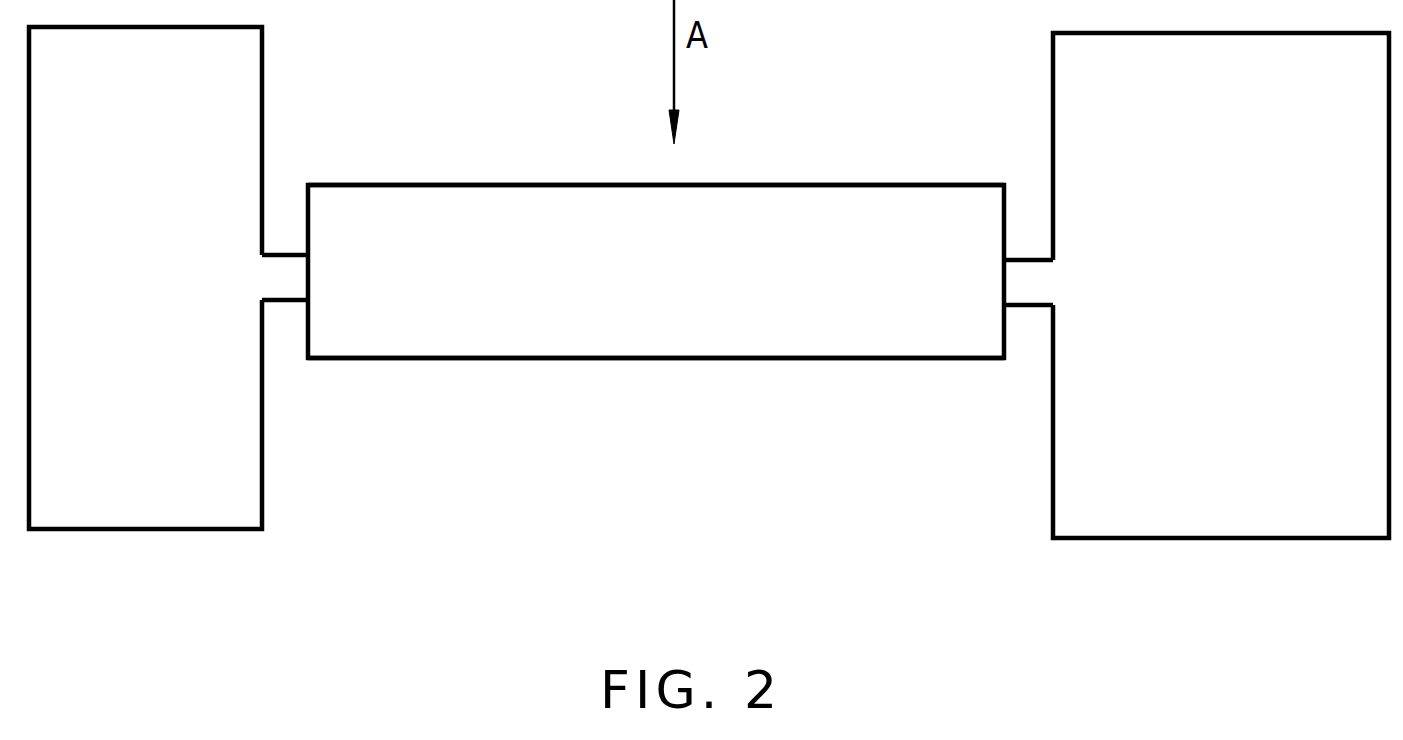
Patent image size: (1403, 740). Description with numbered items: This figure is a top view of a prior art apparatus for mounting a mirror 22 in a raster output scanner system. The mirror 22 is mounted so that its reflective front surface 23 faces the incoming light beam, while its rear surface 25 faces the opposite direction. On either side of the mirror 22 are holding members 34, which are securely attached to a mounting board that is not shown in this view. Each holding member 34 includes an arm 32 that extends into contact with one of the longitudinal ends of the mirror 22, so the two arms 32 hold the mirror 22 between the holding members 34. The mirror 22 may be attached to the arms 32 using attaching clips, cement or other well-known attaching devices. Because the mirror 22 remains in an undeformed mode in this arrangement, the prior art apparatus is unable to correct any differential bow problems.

The mirror 22 is at (873, 340).
The reflective front surface 23 is at (808, 184).
The rear surface 25 is at (669, 360).
The arms 32 is at (288, 304).
The holding members 34 is at (146, 514).